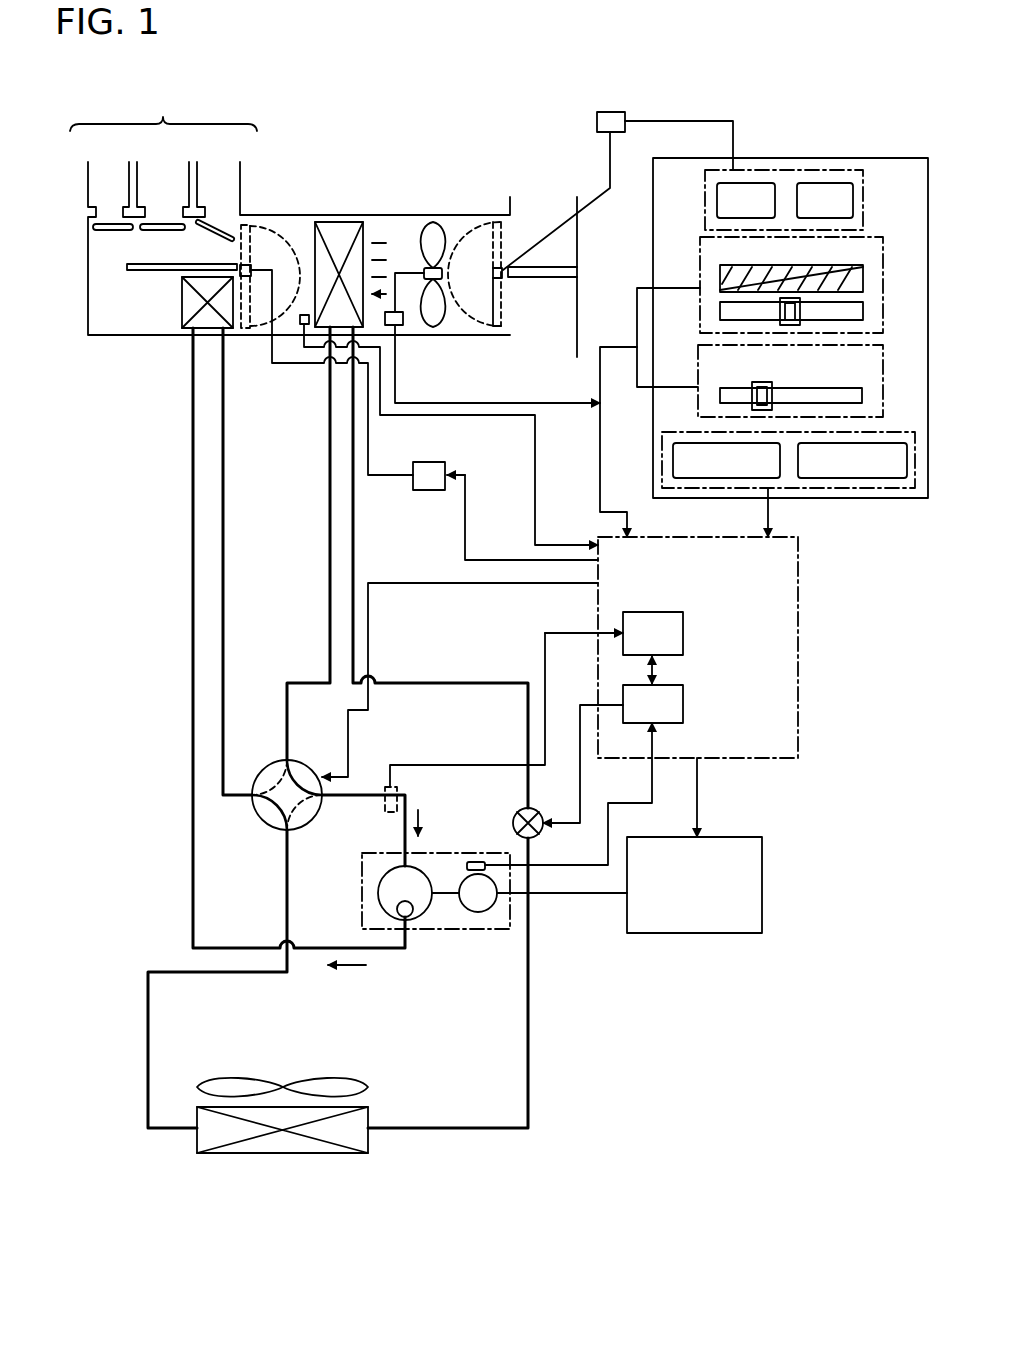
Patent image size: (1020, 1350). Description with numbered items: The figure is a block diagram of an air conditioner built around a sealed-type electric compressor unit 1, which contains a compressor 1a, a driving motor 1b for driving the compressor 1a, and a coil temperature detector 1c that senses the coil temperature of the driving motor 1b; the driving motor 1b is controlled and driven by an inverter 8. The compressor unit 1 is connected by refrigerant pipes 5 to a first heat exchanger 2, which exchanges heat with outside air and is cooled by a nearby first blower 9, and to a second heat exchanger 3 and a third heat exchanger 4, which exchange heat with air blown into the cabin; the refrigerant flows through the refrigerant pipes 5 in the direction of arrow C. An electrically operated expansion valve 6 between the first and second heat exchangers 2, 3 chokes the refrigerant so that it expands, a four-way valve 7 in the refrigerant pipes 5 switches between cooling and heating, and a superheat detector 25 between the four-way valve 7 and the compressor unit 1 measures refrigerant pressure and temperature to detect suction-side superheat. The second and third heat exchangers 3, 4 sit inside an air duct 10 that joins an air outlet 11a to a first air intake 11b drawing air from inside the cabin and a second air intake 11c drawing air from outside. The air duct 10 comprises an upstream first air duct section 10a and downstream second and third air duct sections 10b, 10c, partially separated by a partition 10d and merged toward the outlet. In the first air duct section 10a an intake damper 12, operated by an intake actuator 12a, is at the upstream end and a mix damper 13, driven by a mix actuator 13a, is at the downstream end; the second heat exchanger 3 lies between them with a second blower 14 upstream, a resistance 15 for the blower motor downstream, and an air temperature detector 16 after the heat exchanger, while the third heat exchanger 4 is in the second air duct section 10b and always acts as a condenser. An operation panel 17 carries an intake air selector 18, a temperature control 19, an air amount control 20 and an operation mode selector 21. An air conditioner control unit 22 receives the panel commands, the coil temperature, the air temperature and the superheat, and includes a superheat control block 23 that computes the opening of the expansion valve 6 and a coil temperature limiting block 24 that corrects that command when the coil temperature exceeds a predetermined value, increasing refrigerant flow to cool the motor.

The sealed-type electric compressor unit 1 is at (440, 932).
The compressor 1a is at (378, 903).
The driving motor 1b is at (480, 912).
The coil temperature detector 1c is at (468, 860).
The first heat exchanger 2 is at (320, 1154).
The second heat exchanger 3 is at (339, 221).
The third heat exchanger 4 is at (183, 305).
The refrigerant pipes 5 is at (192, 619).
The electrically operated expansion valve 6 is at (536, 836).
The four-way valve 7 is at (268, 828).
The inverter 8 is at (763, 897).
The first blower 9 is at (330, 1077).
The air duct 10 is at (392, 212).
The first air duct section 10a is at (294, 236).
The second air duct section 10b is at (112, 307).
The third air duct section 10c is at (115, 247).
The partition 10d is at (127, 276).
The air outlet 11a is at (163, 120).
The first air intake 11b is at (543, 206).
The second air intake 11c is at (545, 345).
The intake damper 12 is at (502, 328).
The intake actuator 12a is at (610, 111).
The mix damper 13 is at (246, 330).
The mix actuator 13a is at (433, 491).
The second blower 14 is at (442, 320).
The resistance 15 is at (398, 327).
The air temperature detector 16 is at (302, 328).
The operation panel 17 is at (853, 157).
The intake air selector 18 is at (866, 205).
The temperature control 19 is at (884, 290).
The air amount control 20 is at (884, 405).
The operation mode selector 21 is at (862, 498).
The air conditioner control unit 22 is at (800, 612).
The superheat control block 23 is at (685, 633).
The coil temperature limiting block 24 is at (685, 703).
The superheat detector 25 is at (398, 790).
The arrow C is at (420, 818).